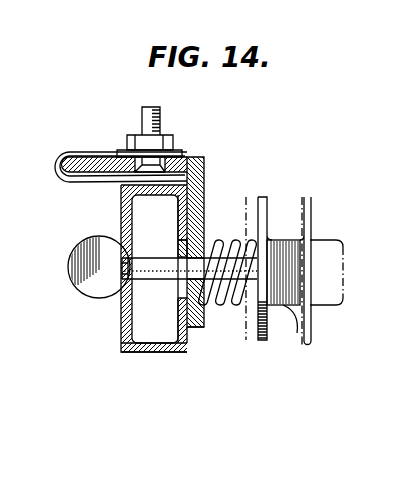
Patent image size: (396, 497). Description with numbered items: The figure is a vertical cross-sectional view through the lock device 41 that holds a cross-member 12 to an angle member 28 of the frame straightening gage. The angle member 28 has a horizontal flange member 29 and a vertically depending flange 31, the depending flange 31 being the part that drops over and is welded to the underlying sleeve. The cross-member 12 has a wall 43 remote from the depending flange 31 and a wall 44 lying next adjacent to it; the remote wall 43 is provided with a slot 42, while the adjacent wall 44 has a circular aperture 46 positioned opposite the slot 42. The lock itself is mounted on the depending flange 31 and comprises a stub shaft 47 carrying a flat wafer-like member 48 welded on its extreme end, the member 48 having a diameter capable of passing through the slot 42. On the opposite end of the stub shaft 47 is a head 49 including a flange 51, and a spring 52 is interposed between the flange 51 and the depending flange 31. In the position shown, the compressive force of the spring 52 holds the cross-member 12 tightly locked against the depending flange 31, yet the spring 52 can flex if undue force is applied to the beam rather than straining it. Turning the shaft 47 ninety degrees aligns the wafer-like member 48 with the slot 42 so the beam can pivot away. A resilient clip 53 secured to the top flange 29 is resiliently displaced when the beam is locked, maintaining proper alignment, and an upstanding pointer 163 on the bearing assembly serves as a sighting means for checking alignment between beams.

The cross-member 12 is at (150, 360).
The angle member 28 is at (215, 167).
The horizontal flange member 29 is at (97, 157).
The vertically depending flange 31 is at (196, 329).
The lock device 41 is at (291, 196).
The slot 42 is at (128, 260).
The wall 43 is at (121, 222).
The wall 44 is at (181, 211).
The circular aperture 46 is at (177, 248).
The stub shaft 47 is at (158, 280).
The flat wafer-like member 48 is at (77, 270).
The head 49 is at (291, 305).
The flange 51 is at (268, 333).
The spring 52 is at (227, 305).
The resilient clip 53 is at (53, 158).
The pointer 163 is at (160, 122).